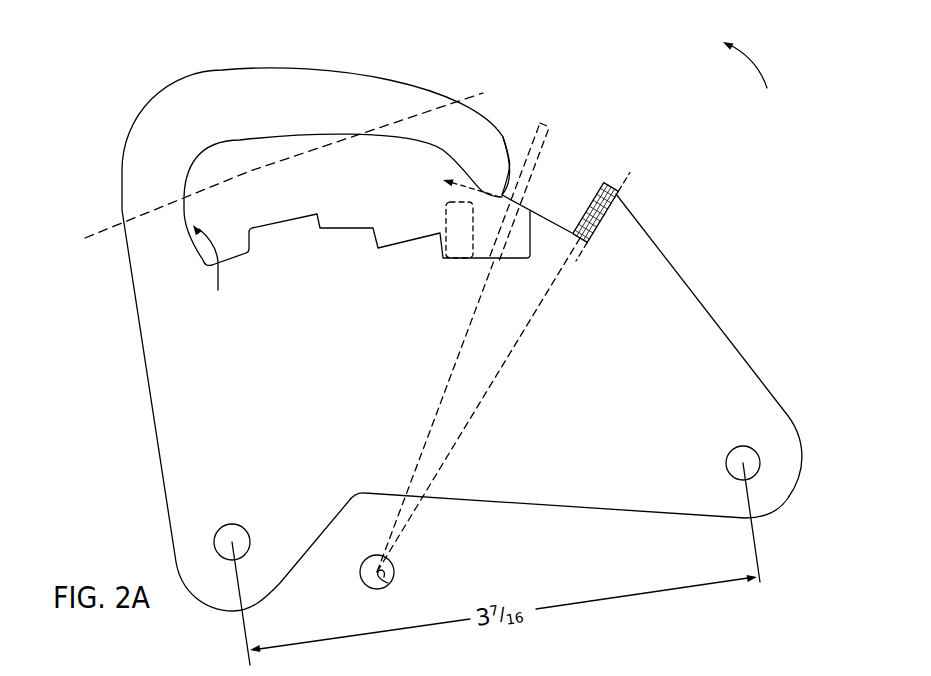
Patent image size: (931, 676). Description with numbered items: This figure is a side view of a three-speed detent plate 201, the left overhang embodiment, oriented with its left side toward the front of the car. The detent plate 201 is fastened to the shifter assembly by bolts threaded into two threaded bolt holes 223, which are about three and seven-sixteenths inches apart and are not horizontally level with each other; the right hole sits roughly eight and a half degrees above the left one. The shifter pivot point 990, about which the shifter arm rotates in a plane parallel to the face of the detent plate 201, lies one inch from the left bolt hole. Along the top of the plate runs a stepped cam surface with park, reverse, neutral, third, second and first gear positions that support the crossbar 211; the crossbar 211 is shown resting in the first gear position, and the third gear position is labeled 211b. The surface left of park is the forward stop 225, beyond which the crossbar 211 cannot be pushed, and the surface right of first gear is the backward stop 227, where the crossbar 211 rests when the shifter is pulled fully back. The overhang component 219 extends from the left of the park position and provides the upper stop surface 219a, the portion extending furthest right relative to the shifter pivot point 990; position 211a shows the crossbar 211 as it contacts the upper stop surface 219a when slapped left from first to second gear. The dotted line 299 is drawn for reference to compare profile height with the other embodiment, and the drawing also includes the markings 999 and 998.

The detent plate 201 is at (712, 307).
The overhang component 219 is at (305, 92).
The upper stop surface 219a is at (512, 180).
The crossbar position at upper stop 211a is at (527, 185).
The crossbar 211 is at (603, 182).
The backward stop 227 is at (624, 189).
The rotation direction arrow 999 is at (747, 67).
The dotted line 299 is at (98, 233).
The third gear position 211b is at (462, 228).
The forward stop 225 is at (218, 290).
The threaded bolt holes 223 is at (245, 528).
The shifter pivot point 990 is at (388, 583).
The pin travel line 998 is at (612, 262).